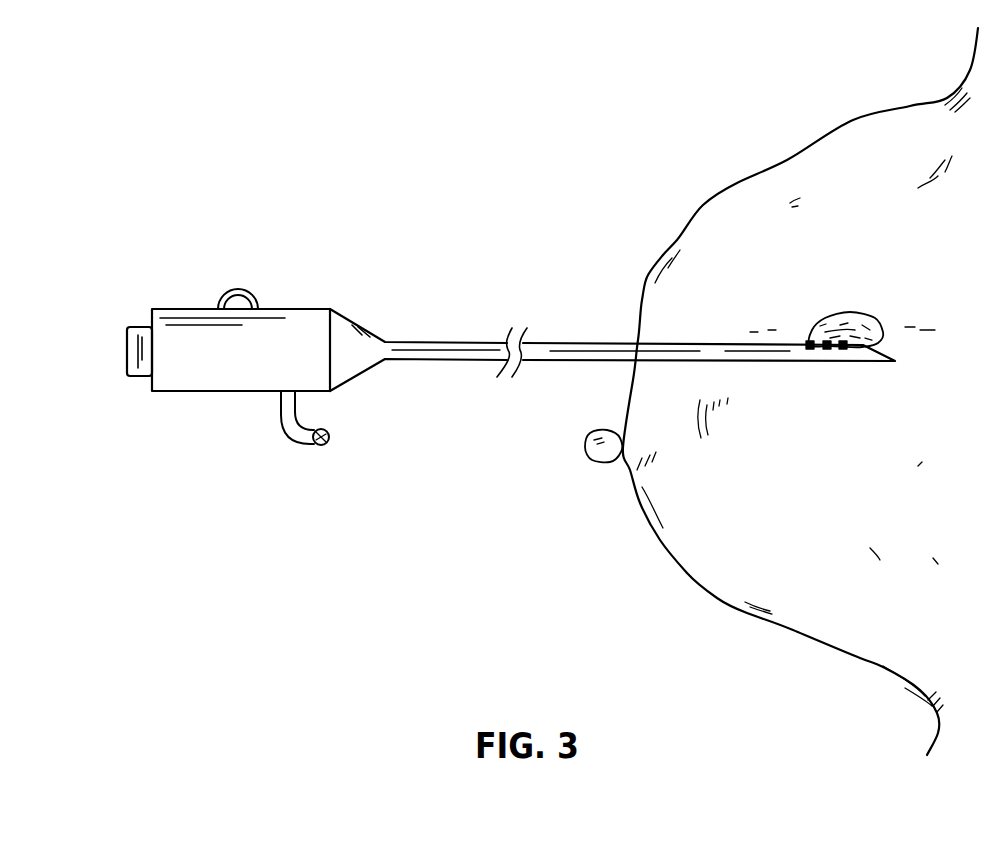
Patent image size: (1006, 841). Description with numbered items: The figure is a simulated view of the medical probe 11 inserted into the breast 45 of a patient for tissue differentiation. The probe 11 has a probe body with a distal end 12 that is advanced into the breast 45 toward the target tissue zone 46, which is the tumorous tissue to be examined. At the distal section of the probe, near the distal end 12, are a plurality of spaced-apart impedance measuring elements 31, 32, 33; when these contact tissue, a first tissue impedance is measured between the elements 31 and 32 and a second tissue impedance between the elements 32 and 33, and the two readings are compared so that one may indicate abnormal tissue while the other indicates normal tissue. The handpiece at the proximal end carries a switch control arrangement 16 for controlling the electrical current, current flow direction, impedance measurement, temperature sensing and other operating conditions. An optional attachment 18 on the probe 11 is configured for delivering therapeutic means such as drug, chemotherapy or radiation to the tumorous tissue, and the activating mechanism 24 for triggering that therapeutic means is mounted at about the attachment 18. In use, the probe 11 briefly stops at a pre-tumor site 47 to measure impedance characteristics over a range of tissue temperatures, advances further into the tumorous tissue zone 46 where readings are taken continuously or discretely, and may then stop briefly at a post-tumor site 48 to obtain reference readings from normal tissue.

The medical probe 11 is at (548, 300).
The distal end 12 is at (894, 360).
The switch control arrangement 16 is at (238, 285).
The attachment 18 is at (283, 433).
The activating mechanism 24 is at (322, 446).
The impedance measuring element 31 is at (843, 350).
The impedance measuring element 32 is at (827, 350).
The impedance measuring element 33 is at (807, 342).
The breast 45 is at (663, 477).
The target tissue zone 46 is at (853, 320).
The pre-tumor site 47 is at (807, 343).
The post-tumor site 48 is at (903, 333).